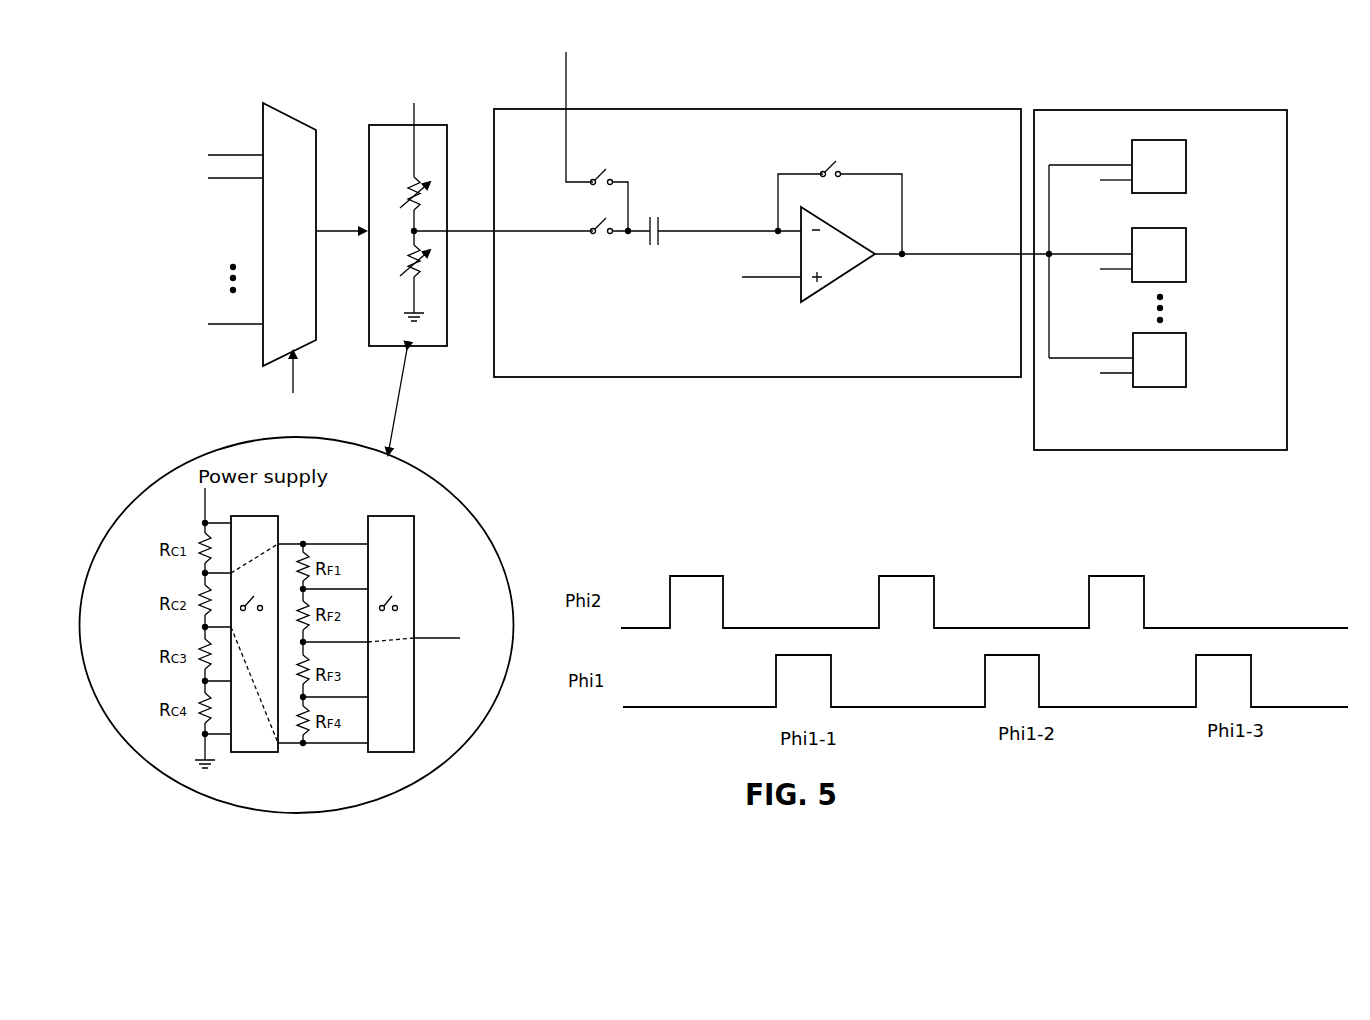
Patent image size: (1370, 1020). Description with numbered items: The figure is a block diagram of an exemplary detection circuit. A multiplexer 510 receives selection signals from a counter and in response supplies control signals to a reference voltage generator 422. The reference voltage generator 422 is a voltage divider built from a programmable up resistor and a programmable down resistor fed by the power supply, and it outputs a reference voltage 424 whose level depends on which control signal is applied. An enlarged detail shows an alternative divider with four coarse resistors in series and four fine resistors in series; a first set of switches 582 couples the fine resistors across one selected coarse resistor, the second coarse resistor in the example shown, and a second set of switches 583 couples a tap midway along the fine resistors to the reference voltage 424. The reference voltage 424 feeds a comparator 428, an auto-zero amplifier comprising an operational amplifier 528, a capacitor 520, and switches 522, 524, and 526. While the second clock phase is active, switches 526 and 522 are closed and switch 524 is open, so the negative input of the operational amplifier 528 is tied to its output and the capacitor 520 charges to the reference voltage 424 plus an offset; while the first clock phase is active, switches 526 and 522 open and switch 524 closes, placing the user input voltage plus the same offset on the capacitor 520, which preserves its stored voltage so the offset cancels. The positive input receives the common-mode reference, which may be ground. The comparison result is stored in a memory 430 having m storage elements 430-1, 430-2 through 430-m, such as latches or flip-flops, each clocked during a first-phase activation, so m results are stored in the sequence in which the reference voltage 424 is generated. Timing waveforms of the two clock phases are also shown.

The multiplexer 510 is at (283, 105).
The reference voltage generator 422 is at (435, 346).
The reference voltage 424 is at (503, 422).
The comparator 428 is at (817, 377).
The memory 430 is at (1160, 307).
The storage element 430-1 is at (1186, 158).
The storage element 430-2 is at (1186, 263).
The storage element 430-m is at (1186, 365).
The capacitor 520 is at (660, 252).
The switch 522 is at (599, 245).
The switch 524 is at (603, 165).
The switch 526 is at (840, 160).
The operational amplifier 528 is at (855, 315).
The first set of switches 582 is at (268, 752).
The second set of switches 583 is at (400, 752).